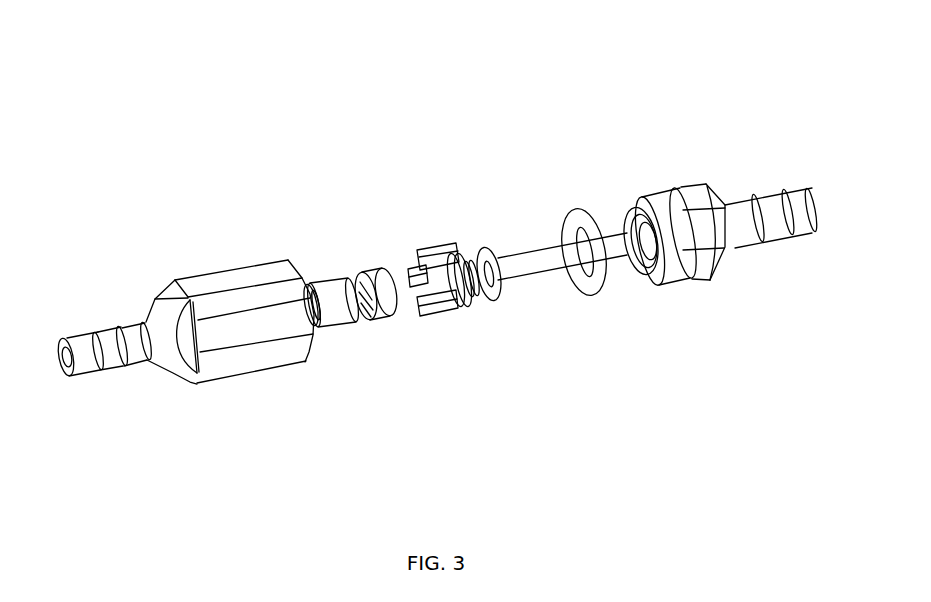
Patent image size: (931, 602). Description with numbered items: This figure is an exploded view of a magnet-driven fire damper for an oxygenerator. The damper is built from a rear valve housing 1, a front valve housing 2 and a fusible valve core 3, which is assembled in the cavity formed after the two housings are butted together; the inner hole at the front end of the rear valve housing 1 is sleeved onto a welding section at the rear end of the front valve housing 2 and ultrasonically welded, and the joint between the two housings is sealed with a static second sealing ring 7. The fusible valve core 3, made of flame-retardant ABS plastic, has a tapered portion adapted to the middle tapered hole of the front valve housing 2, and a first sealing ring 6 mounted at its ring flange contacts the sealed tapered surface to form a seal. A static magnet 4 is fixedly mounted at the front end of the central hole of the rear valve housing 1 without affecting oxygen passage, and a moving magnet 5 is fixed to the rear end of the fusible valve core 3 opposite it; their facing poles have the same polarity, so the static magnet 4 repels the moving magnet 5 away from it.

The rear valve housing 1 is at (188, 200).
The front valve housing 2 is at (719, 152).
The fusible valve core 3 is at (562, 359).
The static magnet 4 is at (394, 381).
The moving magnet 5 is at (309, 169).
The first sealing ring 6 is at (427, 166).
The second sealing ring 7 is at (583, 158).